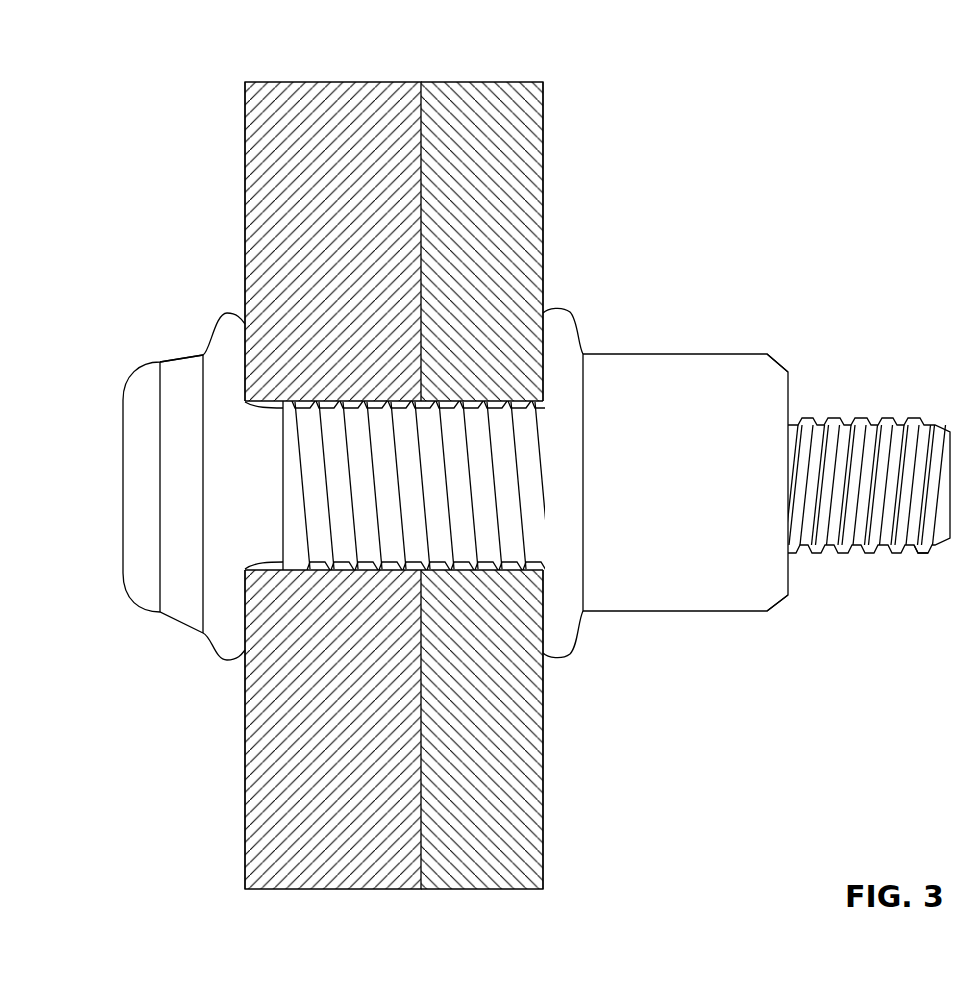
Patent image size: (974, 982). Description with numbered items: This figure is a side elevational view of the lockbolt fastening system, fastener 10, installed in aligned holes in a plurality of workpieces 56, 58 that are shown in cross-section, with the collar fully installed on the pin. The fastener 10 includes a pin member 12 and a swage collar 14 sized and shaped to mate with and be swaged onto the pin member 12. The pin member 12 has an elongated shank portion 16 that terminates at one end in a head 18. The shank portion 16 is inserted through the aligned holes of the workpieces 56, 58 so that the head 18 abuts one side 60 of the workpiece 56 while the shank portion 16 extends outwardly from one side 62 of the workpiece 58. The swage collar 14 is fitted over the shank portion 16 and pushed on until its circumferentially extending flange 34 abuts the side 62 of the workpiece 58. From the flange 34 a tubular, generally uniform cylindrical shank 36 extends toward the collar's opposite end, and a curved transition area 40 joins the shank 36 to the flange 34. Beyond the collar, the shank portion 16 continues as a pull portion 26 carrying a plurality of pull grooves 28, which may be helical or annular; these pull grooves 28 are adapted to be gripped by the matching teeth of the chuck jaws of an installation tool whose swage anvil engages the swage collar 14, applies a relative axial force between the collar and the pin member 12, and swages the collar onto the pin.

The fastener 10 is at (118, 438).
The pin member 12 is at (215, 637).
The swage collar 14 is at (678, 354).
The shank portion 16 is at (390, 527).
The head 18 is at (143, 365).
The pull portion 26 is at (862, 418).
The pull grooves 28 is at (885, 548).
The flange 34 is at (560, 310).
The shank 36 is at (737, 354).
The curved transition area 40 is at (583, 611).
The workpiece 56 is at (332, 82).
The workpiece 58 is at (482, 82).
The side of the workpiece 60 is at (245, 192).
The side of the workpiece 62 is at (543, 173).